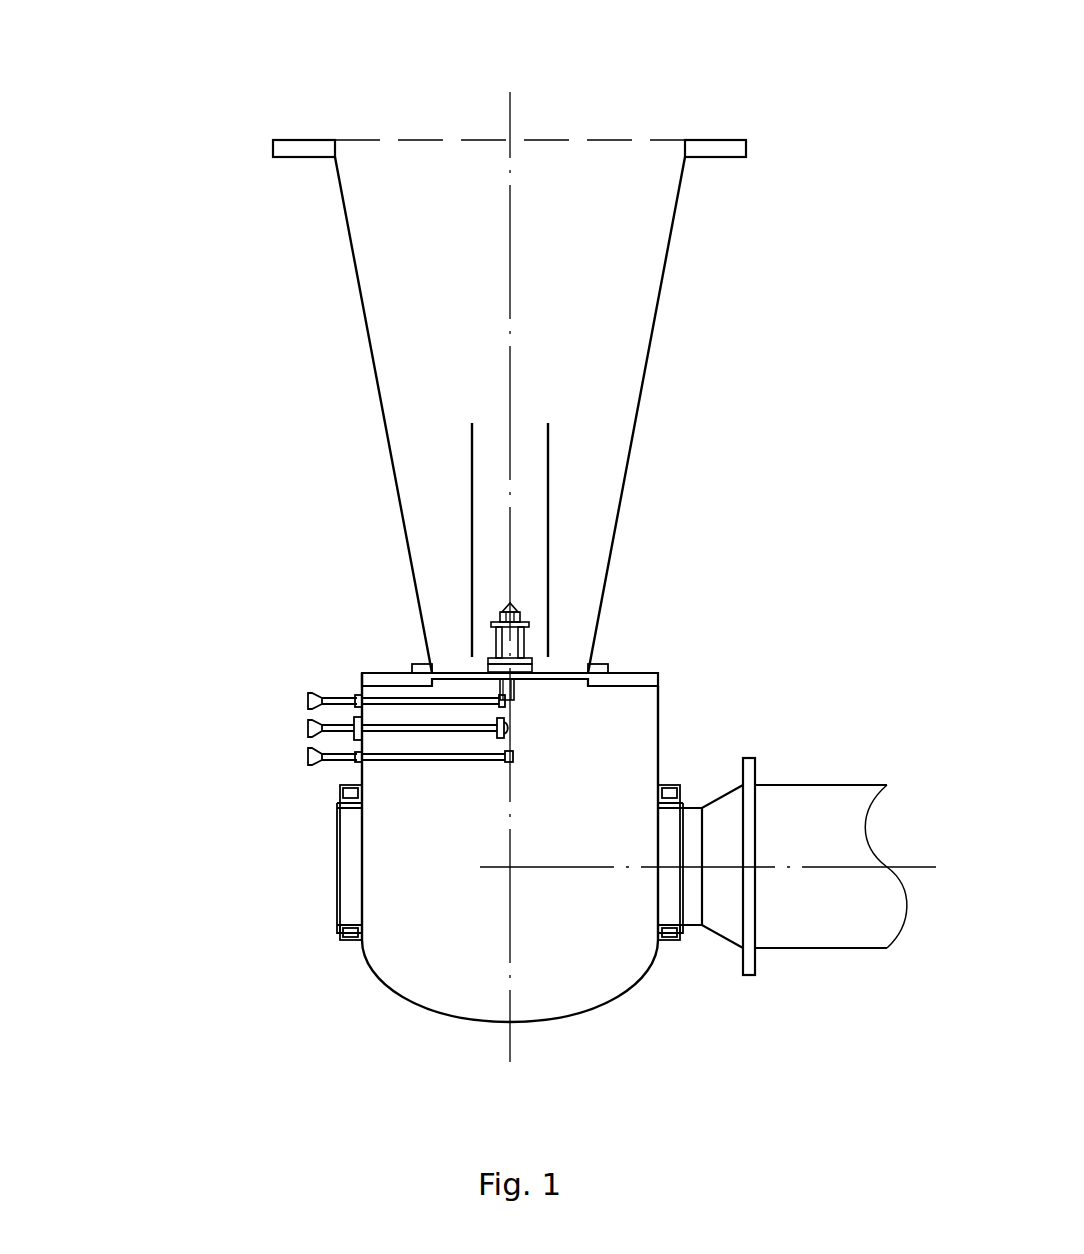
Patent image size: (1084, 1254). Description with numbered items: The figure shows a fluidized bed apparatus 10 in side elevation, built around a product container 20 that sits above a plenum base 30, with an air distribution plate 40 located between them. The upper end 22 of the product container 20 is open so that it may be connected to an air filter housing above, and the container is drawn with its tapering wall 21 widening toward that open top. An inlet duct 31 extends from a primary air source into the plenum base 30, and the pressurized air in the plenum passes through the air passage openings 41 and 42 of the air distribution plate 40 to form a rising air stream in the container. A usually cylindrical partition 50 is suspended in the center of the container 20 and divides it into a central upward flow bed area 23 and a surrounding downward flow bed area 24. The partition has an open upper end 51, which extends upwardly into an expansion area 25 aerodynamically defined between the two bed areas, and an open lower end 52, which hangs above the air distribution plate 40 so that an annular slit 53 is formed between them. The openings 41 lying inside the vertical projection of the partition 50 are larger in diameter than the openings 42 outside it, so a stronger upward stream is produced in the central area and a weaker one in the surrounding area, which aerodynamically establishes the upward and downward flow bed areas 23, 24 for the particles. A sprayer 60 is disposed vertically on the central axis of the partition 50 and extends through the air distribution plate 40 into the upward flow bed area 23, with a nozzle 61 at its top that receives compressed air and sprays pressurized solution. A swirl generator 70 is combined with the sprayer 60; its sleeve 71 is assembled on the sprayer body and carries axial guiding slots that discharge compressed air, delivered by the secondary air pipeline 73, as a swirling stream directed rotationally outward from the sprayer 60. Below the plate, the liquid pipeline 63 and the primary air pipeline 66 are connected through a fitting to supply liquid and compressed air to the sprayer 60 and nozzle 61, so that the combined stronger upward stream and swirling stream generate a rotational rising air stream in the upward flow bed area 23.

The fluidized bed apparatus 10 is at (362, 674).
The product container 20 is at (746, 140).
The hopper wall 21 is at (662, 285).
The upper end 22 is at (638, 140).
The central upward flow bed area 23 is at (528, 447).
The surrounding downward flow bed area 24 is at (587, 480).
The expansion area 25 is at (593, 377).
The plenum base 30 is at (433, 957).
The inlet duct 31 is at (788, 948).
The air distribution plate 40 is at (480, 661).
The air passage openings 41 is at (425, 664).
The air passage openings 42 is at (440, 673).
The partition 50 is at (548, 545).
The open upper end 51 is at (472, 437).
The open lower end 52 is at (472, 642).
The annular slit 53 is at (590, 666).
The sprayer 60 is at (528, 618).
The nozzle 61 is at (517, 607).
The liquid pipeline 63 is at (308, 757).
The primary air pipeline 66 is at (308, 727).
The swirl generator 70 is at (529, 645).
The sleeve 71 is at (547, 664).
The secondary air pipeline 73 is at (308, 700).